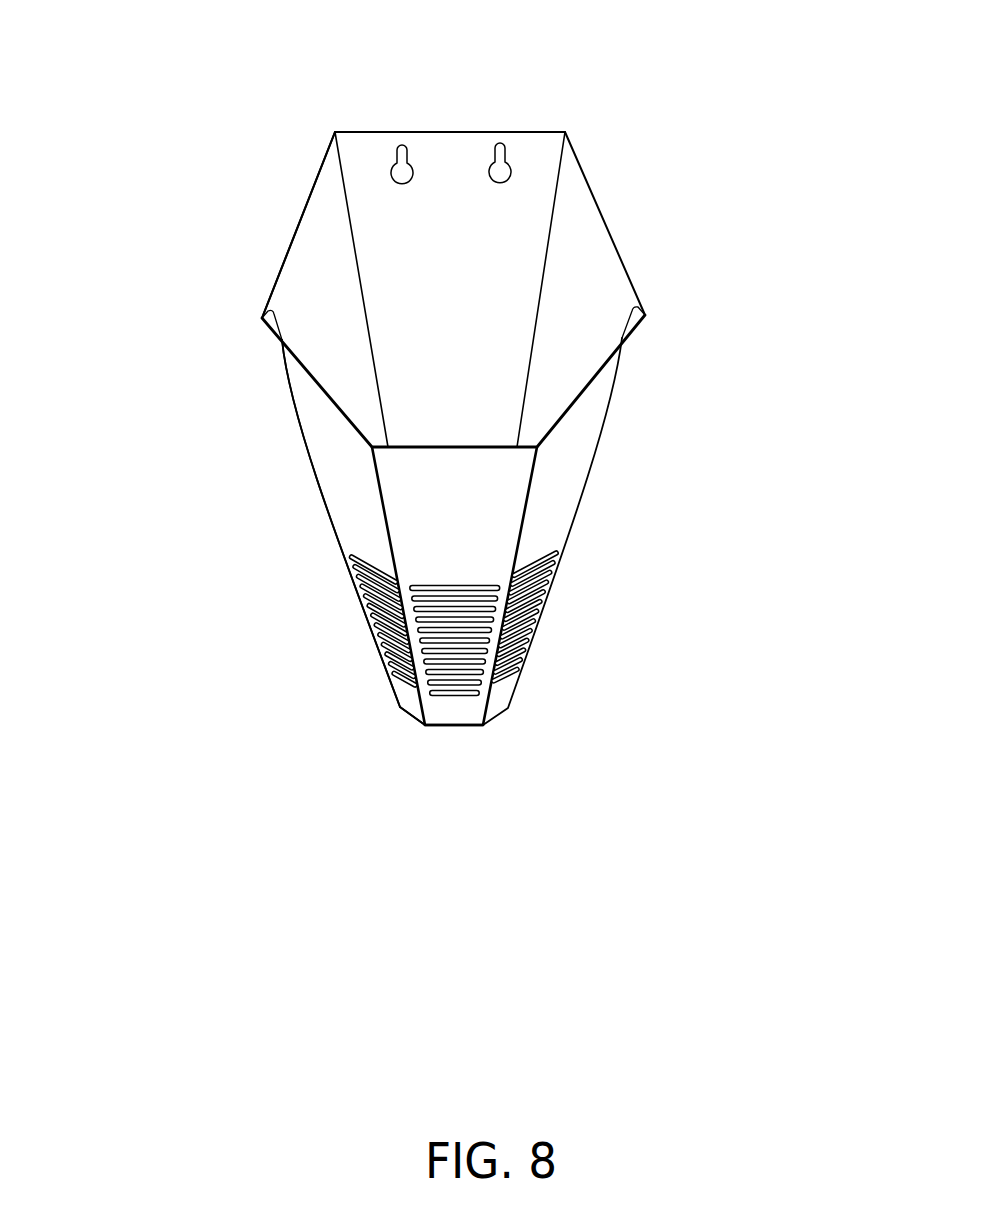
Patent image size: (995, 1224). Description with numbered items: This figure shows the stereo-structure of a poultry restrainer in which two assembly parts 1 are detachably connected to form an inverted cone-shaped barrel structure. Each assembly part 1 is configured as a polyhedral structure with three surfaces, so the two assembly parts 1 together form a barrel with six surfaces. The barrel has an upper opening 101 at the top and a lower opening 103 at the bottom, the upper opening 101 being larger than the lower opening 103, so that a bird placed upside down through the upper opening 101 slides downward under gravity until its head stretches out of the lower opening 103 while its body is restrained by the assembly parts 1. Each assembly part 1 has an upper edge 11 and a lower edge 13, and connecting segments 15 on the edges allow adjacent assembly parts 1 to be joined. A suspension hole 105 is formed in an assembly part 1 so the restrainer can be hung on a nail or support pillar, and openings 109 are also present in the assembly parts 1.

The assembly part 1 is at (548, 502).
The upper opening 101 is at (553, 219).
The suspension hole 105 is at (427, 140).
The upper edge 11 is at (297, 225).
The connecting segment 15 is at (276, 335).
The lower edge 13 is at (412, 717).
The ventilation slots 109 is at (490, 649).
The lower opening 103 is at (495, 757).